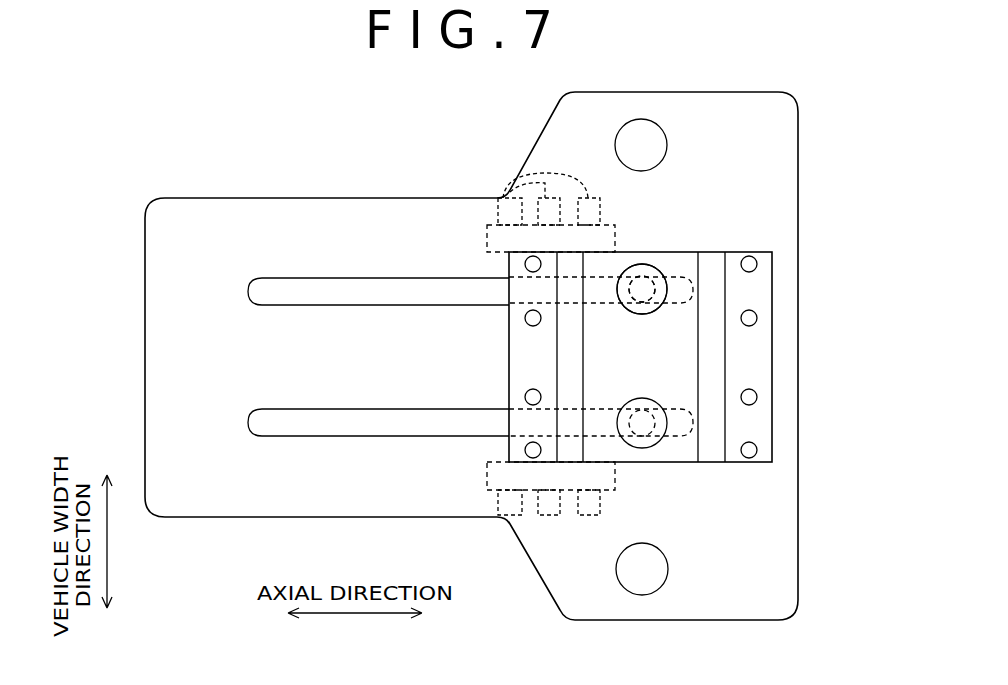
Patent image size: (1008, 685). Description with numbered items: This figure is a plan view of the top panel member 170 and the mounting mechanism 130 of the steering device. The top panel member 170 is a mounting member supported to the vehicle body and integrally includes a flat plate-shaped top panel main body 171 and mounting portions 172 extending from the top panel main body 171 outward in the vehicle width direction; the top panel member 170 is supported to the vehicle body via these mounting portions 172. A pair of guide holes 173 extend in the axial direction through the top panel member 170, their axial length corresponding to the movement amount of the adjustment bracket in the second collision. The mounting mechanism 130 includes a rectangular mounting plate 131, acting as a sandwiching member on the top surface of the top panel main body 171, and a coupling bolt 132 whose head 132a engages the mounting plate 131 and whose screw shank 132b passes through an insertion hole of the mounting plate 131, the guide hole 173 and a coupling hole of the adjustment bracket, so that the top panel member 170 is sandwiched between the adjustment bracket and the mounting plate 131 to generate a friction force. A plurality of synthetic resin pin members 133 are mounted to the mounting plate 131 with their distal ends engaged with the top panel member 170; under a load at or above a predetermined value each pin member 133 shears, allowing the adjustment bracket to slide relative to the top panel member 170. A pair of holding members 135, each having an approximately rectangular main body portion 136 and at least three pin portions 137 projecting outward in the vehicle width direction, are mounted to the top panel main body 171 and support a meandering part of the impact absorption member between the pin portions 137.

The top panel member 170 is at (792, 158).
The top panel main body 171 is at (273, 212).
The mounting portion 172 is at (725, 93).
The guide hole 173 is at (315, 296).
The mounting mechanism 130 is at (792, 257).
The mounting plate 131 is at (765, 292).
The coupling bolt 132 is at (615, 200).
The head 132a is at (668, 292).
The screw shank 132b is at (651, 277).
The pin member 133 is at (525, 318).
The holding member 135 is at (487, 240).
The main body portion 136 is at (487, 217).
The pin portion 137 is at (503, 178).